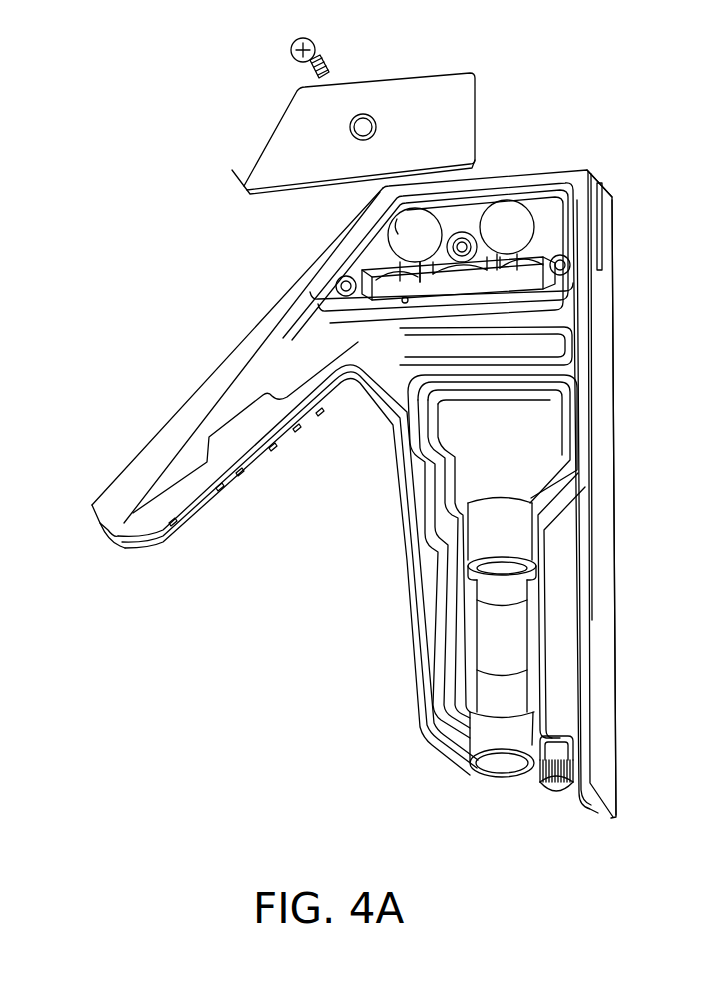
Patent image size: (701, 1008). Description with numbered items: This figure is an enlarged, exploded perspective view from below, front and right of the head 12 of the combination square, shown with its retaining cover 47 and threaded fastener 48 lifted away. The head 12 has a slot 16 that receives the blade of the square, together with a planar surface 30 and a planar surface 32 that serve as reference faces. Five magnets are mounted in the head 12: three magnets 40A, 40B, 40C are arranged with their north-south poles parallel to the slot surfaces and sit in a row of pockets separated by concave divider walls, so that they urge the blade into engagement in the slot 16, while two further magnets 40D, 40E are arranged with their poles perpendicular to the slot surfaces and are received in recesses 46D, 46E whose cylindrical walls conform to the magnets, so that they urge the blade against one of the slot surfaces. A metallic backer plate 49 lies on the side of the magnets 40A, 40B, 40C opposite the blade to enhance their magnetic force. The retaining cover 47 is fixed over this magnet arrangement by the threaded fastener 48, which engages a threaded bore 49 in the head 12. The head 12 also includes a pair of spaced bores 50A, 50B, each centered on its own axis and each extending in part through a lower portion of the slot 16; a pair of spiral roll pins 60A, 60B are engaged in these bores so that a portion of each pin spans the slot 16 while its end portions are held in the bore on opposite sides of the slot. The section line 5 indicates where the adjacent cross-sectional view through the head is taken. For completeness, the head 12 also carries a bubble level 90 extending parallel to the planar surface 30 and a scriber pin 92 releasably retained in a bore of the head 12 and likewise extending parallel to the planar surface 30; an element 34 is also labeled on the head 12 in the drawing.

The section line 5 is at (562, 52).
The head 12 is at (412, 685).
The slot 16 is at (600, 184).
The planar surface 30 is at (602, 631).
The planar surface 32 is at (143, 447).
The tab 34 is at (600, 222).
The magnet 40A is at (386, 290).
The magnet 40B is at (455, 289).
The magnet 40C is at (521, 280).
The magnet 40D is at (410, 238).
The magnet 40E is at (503, 228).
The recess 46D is at (397, 225).
The recess 46E is at (470, 246).
The retaining cover 47 is at (255, 153).
The threaded fastener 48 is at (313, 43).
The threaded bore 49 is at (461, 243).
The bore 50A is at (340, 283).
The bore 50B is at (565, 262).
The spiral roll pin 60A is at (362, 292).
The spiral roll pin 60B is at (548, 283).
The bubble level 90 is at (477, 647).
The scriber pin 92 is at (543, 795).